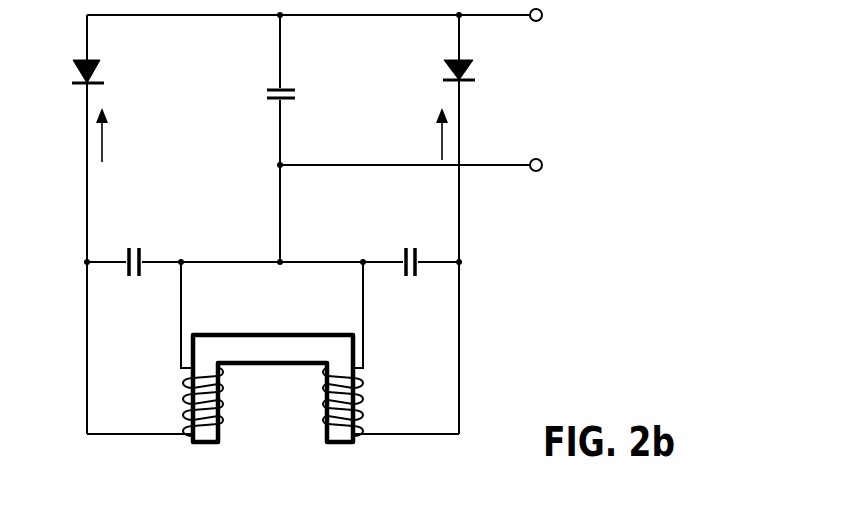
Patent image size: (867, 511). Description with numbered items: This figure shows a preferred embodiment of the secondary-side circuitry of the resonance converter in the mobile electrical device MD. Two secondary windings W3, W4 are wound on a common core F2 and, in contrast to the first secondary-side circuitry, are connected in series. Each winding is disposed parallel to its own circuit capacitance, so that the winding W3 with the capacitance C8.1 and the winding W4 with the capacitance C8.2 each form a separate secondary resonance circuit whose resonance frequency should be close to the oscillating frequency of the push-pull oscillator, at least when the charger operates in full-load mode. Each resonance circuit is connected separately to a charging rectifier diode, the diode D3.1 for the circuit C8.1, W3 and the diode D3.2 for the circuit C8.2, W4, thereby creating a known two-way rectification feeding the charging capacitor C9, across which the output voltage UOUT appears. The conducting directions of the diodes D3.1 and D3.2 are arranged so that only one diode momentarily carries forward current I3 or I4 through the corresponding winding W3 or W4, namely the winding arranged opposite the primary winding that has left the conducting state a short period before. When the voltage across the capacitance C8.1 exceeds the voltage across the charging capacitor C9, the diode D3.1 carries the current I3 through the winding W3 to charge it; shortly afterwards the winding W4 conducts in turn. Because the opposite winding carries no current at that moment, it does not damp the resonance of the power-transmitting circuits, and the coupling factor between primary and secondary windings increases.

The charging rectifier diode D3.1 is at (126, 73).
The charging rectifier diode D3.2 is at (421, 73).
The forward current I3 is at (119, 135).
The forward current I4 is at (423, 134).
The charging capacitor C9 is at (307, 98).
The secondary circuit capacitance C8.1 is at (137, 240).
The secondary circuit capacitance C8.2 is at (409, 240).
The transformer core F2 is at (273, 367).
The secondary winding W3 is at (166, 402).
The secondary winding W4 is at (374, 402).
The output voltage UOUT is at (529, 88).
The mobile electrical device MD is at (621, 37).